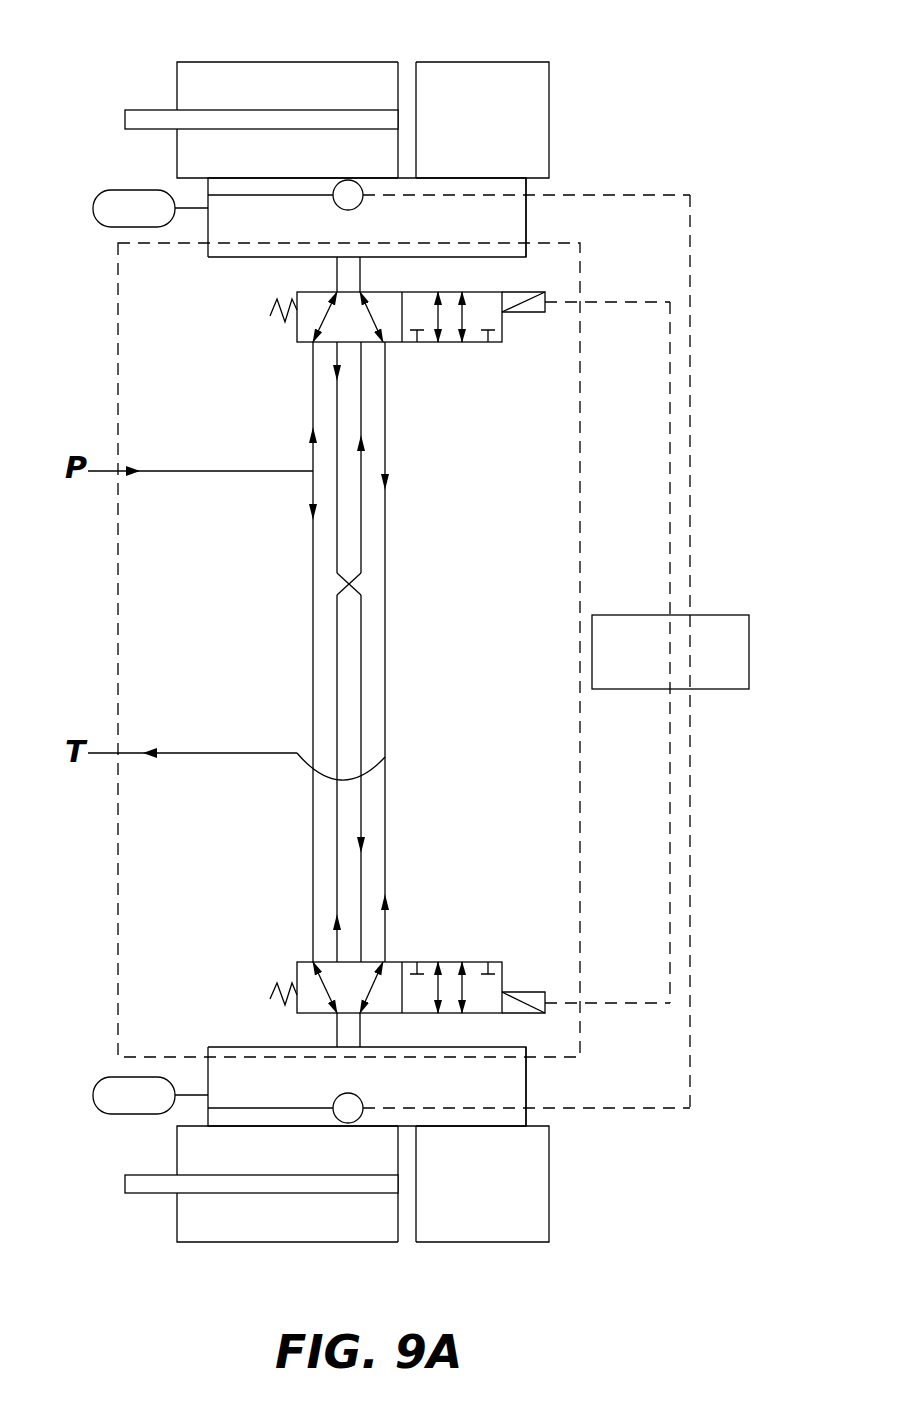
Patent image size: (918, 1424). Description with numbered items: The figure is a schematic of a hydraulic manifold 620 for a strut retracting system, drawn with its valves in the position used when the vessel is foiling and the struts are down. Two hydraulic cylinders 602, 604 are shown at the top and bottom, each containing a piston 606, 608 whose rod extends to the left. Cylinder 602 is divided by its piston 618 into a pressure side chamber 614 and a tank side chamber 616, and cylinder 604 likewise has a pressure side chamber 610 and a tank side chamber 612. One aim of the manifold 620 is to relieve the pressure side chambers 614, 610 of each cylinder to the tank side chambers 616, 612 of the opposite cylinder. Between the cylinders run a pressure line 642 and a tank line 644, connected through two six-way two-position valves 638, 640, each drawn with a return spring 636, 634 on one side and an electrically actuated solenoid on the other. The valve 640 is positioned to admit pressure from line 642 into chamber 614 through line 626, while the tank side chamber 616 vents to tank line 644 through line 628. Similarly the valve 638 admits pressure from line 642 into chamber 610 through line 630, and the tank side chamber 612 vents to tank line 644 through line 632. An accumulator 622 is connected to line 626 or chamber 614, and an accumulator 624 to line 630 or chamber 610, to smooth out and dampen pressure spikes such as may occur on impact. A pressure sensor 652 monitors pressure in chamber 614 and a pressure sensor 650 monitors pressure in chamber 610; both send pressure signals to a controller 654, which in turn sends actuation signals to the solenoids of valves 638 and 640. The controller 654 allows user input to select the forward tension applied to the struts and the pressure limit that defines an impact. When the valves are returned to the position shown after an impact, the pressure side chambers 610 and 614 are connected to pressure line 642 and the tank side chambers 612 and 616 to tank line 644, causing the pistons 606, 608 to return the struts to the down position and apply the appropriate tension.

The hydraulic cylinder 602 is at (323, 89).
The hydraulic cylinder 604 is at (322, 1220).
The piston 606 is at (152, 110).
The piston 608 is at (152, 1194).
The pressure side chamber 610 is at (255, 1242).
The tank side chamber 612 is at (526, 1215).
The pressure side chamber 614 is at (253, 85).
The tank side chamber 616 is at (527, 85).
The first piston 618 is at (405, 72).
The hydraulic manifold 620 is at (580, 870).
The first accumulator 622 is at (93, 212).
The accumulator 624 is at (93, 1101).
The line 626 is at (208, 245).
The line 628 is at (526, 208).
The line 630 is at (208, 1077).
The line 632 is at (526, 1088).
The second valve return spring 634 is at (270, 999).
The first valve return spring 636 is at (270, 316).
The 6-way 2-position valve 638 is at (452, 948).
The 6-way 2-position valve 640 is at (452, 354).
The pressure line 642 is at (313, 873).
The tank line 644 is at (385, 532).
The pressure sensor 650 is at (360, 1097).
The pressure sensor 652 is at (360, 205).
The controller 654 is at (703, 612).